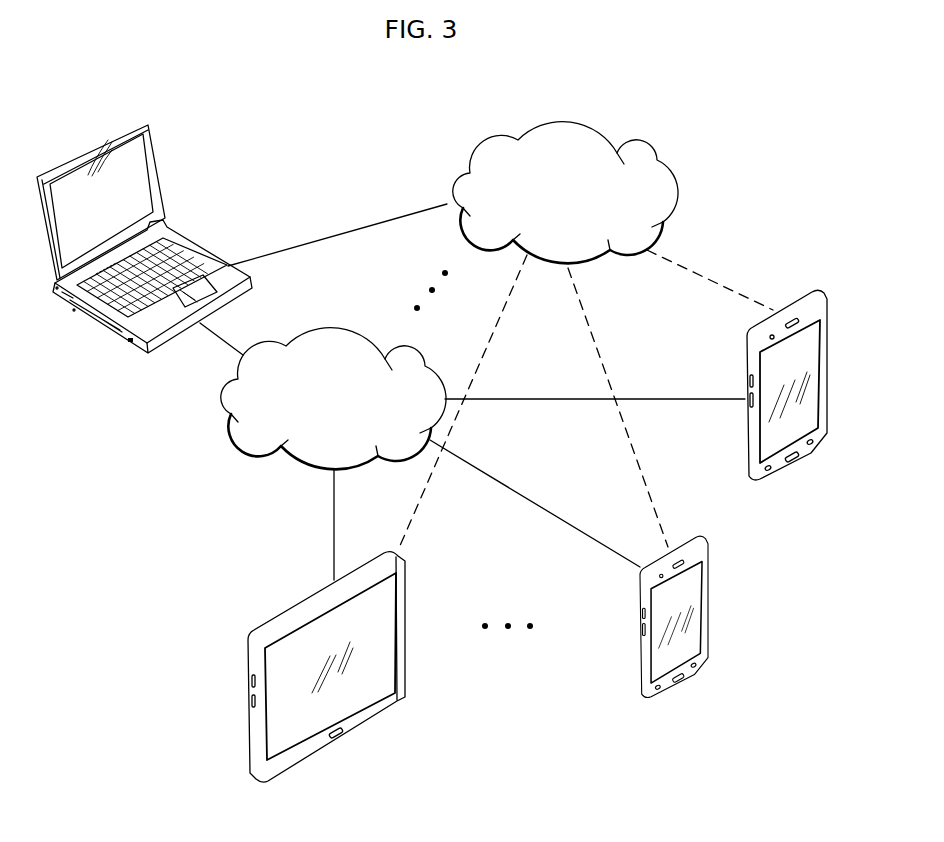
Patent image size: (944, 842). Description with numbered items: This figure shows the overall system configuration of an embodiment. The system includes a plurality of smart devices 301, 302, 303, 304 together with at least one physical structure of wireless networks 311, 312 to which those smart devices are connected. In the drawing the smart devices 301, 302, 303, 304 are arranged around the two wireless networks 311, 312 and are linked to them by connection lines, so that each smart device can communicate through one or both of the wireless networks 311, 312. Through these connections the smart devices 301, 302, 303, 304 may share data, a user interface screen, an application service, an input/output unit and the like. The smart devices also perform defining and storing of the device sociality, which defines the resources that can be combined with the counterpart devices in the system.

The smart device 301 is at (160, 173).
The smart device 302 is at (793, 300).
The smart device 303 is at (272, 617).
The smart device 304 is at (711, 591).
The wireless network 311 is at (337, 328).
The wireless network 312 is at (563, 122).